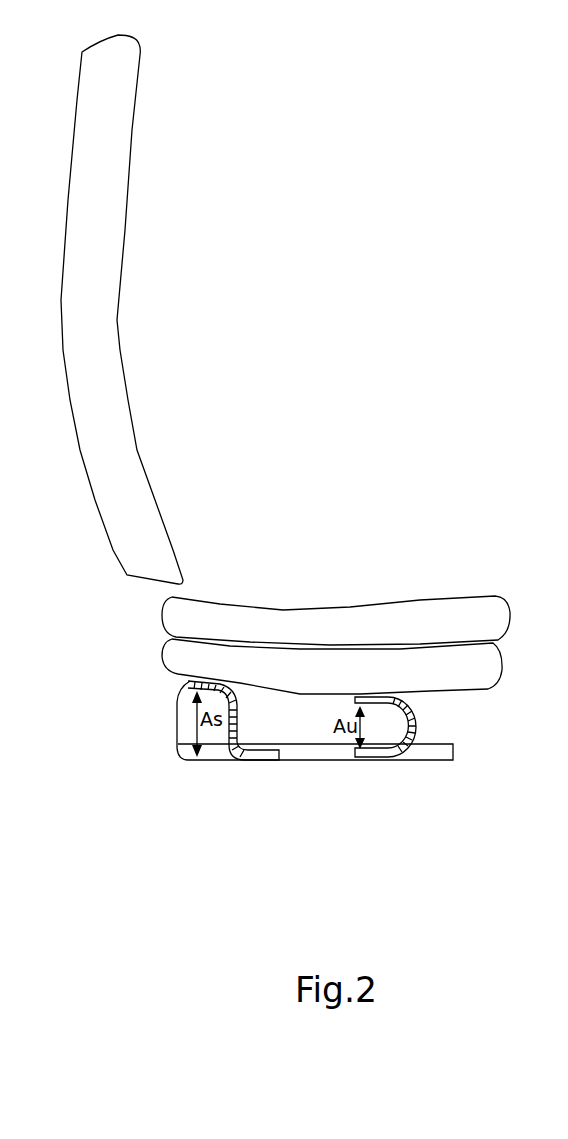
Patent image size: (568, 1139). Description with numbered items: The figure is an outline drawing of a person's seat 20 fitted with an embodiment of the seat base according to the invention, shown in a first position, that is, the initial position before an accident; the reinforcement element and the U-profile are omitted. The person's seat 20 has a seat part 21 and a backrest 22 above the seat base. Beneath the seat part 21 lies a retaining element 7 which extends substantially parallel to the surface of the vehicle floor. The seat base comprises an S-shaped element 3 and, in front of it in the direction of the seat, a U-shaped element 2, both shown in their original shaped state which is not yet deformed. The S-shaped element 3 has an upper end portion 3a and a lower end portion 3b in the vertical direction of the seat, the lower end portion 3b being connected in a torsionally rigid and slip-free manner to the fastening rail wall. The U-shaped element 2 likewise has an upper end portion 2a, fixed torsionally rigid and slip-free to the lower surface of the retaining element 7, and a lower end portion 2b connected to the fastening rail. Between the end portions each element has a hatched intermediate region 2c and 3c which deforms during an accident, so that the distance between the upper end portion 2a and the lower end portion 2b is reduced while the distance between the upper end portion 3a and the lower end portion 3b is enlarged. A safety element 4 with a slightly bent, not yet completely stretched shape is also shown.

The person's seat 20 is at (343, 443).
The seat part 21 is at (318, 623).
The backrest 22 is at (132, 467).
The retaining element 7 is at (183, 653).
The safety element 4 is at (178, 702).
The S-shaped element 3 is at (212, 743).
The upper end portion 3a is at (188, 690).
The lower end portion 3b is at (270, 757).
The intermediate region 3c is at (233, 753).
The U-shaped element 2 is at (437, 750).
The upper end portion 2a is at (400, 703).
The lower end portion 2b is at (377, 757).
The intermediate region 2c is at (397, 755).